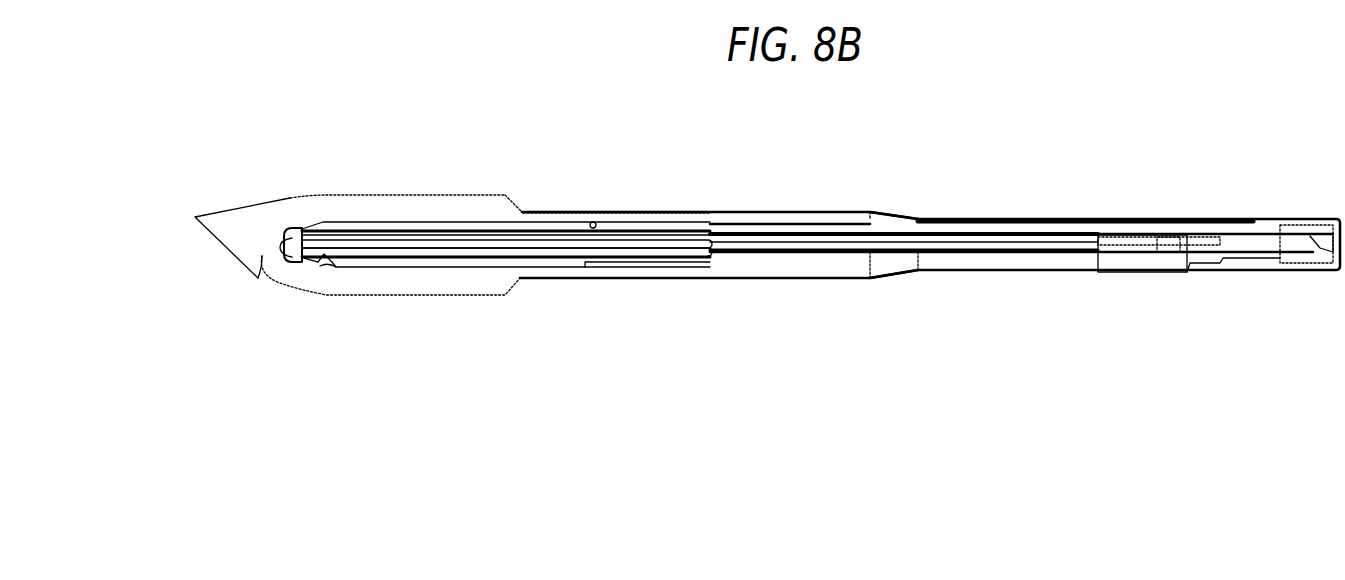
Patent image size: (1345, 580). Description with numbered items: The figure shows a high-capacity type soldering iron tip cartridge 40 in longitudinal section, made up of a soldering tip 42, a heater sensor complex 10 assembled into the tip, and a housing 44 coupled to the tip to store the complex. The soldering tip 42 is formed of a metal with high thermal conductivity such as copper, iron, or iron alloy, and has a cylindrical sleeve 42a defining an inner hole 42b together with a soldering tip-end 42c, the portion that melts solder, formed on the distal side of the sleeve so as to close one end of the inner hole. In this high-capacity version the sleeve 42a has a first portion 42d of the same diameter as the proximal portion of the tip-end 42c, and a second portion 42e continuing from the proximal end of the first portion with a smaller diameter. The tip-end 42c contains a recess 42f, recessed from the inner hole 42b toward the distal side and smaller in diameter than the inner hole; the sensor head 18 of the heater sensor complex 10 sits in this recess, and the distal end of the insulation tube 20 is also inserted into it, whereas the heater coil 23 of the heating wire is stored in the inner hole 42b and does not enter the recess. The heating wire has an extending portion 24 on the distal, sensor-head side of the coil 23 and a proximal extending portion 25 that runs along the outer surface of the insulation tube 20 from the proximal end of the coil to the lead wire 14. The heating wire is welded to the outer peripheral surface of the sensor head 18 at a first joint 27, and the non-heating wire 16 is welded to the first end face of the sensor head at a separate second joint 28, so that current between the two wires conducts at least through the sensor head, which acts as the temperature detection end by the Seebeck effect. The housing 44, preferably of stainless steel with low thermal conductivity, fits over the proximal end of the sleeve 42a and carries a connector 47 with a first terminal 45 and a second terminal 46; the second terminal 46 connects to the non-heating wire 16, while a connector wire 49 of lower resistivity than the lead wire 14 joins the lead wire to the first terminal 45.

The heater sensor complex 10 is at (665, 265).
The lead wire 14 is at (686, 220).
The non-heating wire 16 is at (782, 250).
The sensor head 18 is at (250, 276).
The insulation tube 20 is at (585, 268).
The heater coil 23 is at (473, 258).
The extending portion 24 is at (374, 227).
The proximal extending portion 25 is at (594, 222).
The first joint 27 is at (297, 228).
The second joint 28 is at (308, 252).
The tip cartridge 40 is at (795, 178).
The soldering tip 42 is at (341, 178).
The cylindrical sleeve 42a is at (418, 300).
The inner hole 42b is at (491, 229).
The soldering tip-end 42c is at (262, 205).
The first portion 42d is at (443, 195).
The second portion 42e is at (553, 210).
The recess 42f is at (340, 258).
The housing 44 is at (850, 211).
The first terminal 45 is at (1200, 218).
The second terminal 46 is at (1203, 273).
The connector 47 is at (1287, 218).
The connector wire 49 is at (1112, 218).